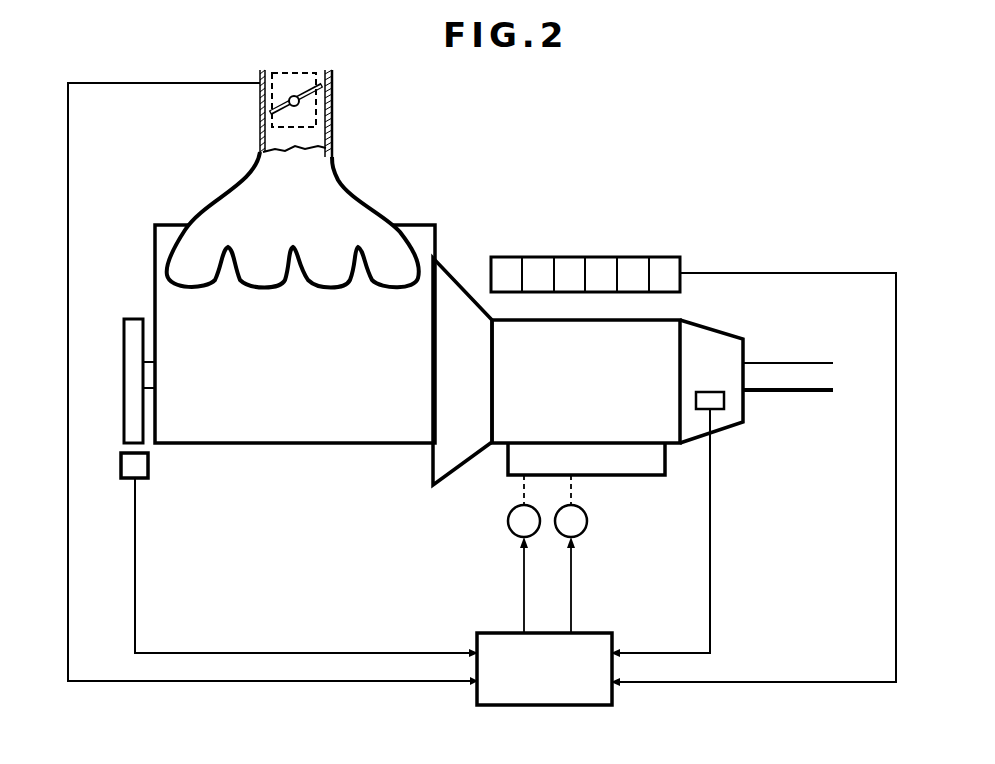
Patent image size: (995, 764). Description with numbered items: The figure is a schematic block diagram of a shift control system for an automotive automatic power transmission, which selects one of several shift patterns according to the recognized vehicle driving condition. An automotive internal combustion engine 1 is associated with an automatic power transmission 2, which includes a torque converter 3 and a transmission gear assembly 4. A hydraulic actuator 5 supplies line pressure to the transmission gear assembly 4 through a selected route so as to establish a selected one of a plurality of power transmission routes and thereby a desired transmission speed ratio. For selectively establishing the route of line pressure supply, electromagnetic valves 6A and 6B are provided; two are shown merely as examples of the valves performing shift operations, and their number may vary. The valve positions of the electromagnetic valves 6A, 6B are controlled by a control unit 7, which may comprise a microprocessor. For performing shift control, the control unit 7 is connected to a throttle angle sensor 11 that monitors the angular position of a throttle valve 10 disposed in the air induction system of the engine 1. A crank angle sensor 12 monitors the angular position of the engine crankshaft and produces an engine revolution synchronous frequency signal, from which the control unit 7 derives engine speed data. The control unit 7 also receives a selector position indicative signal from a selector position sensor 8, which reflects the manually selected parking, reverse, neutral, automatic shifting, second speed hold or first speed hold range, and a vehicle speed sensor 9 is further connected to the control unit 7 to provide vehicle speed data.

The internal combustion engine 1 is at (158, 219).
The automatic power transmission 2 is at (676, 316).
The torque converter 3 is at (447, 382).
The transmission gear assembly 4 is at (572, 382).
The hydraulic actuator 5 is at (641, 477).
The electromagnetic valve 6A is at (510, 531).
The electromagnetic valve 6B is at (585, 531).
The control unit 7 is at (497, 632).
The selector position sensor 8 is at (608, 256).
The vehicle speed sensor 9 is at (724, 400).
The throttle valve 10 is at (303, 103).
The throttle angle sensor 11 is at (285, 72).
The crank angle sensor 12 is at (148, 463).